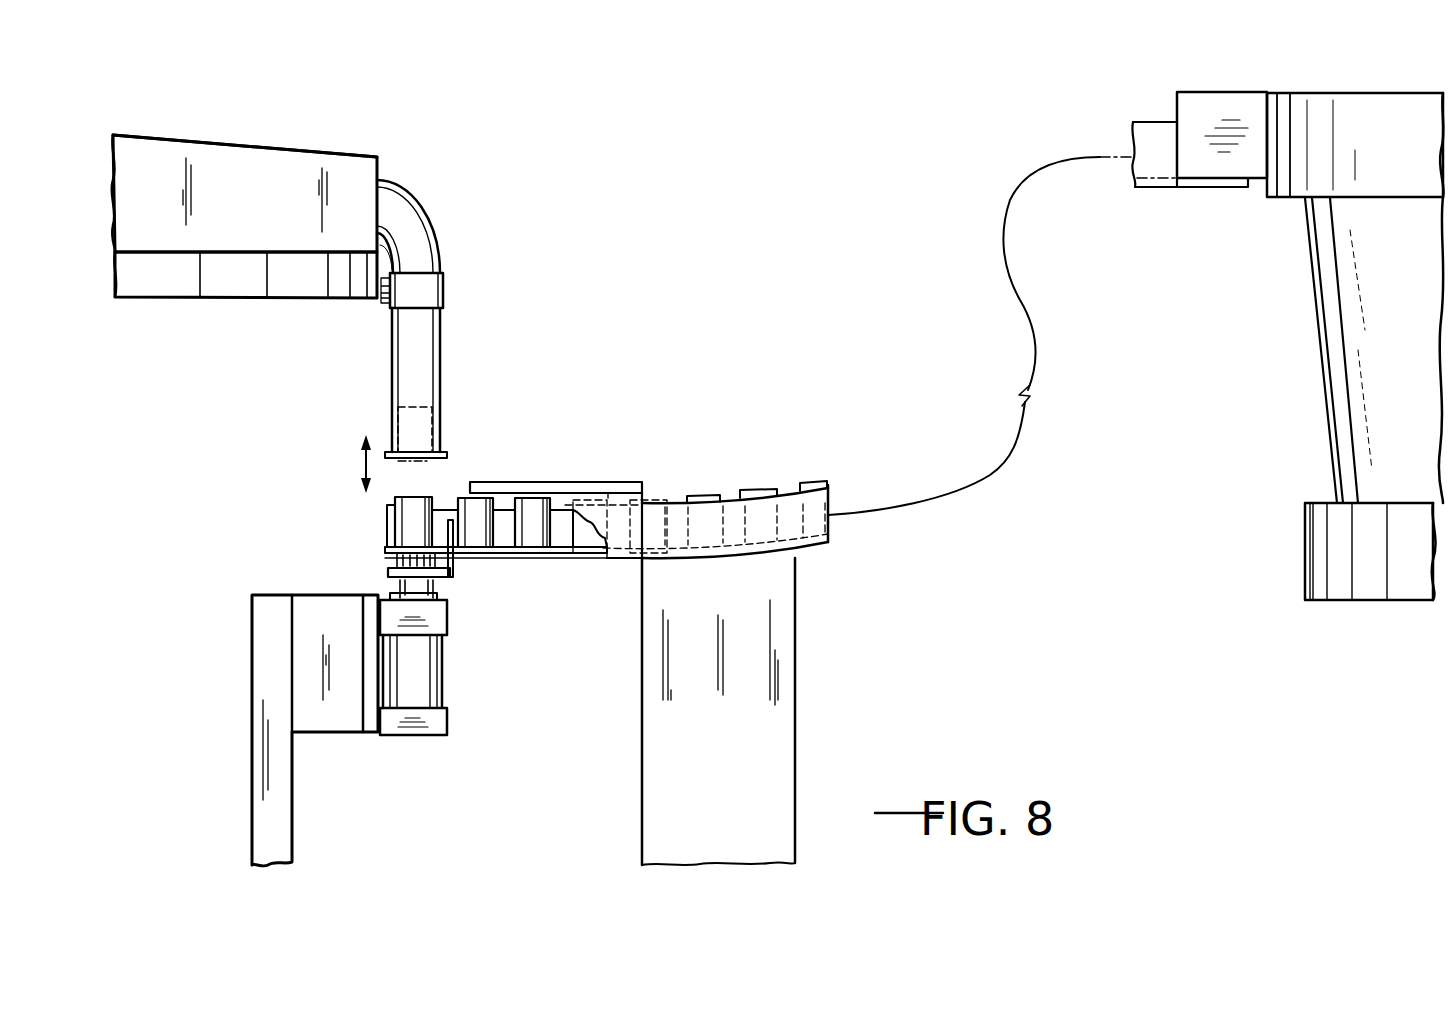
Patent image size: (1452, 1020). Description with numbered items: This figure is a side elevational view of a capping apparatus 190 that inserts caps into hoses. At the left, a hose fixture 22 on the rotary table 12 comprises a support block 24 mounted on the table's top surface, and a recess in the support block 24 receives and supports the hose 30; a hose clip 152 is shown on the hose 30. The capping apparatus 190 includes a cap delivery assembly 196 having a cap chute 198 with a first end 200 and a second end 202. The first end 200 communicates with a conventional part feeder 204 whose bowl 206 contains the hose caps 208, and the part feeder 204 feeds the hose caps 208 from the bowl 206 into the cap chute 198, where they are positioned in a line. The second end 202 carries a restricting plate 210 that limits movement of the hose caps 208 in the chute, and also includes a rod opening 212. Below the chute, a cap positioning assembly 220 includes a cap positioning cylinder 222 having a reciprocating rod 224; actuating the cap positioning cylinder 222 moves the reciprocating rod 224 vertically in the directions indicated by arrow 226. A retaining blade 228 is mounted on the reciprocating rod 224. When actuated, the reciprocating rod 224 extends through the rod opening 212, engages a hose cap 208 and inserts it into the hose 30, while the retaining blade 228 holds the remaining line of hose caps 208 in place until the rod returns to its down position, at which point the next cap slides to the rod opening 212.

The rotary table 12 is at (183, 298).
The hose fixture 22 is at (180, 135).
The support block 24 is at (335, 150).
The hose 30 is at (428, 222).
The hose clip 152 is at (443, 290).
The capping apparatus 190 is at (556, 298).
The cap delivery assembly 196 is at (845, 605).
The cap chute 198 is at (613, 560).
The first end of cap chute 200 is at (1153, 123).
The second end of cap chute 202 is at (443, 500).
The part feeder 204 is at (1365, 92).
The bowl 206 is at (1320, 363).
The hose cap 208 is at (442, 423).
The restricting plate 210 is at (563, 483).
The rod opening 212 is at (393, 565).
The cap positioning assembly 220 is at (230, 672).
The cap positioning cylinder 222 is at (447, 688).
The reciprocating rod 224 is at (397, 583).
The arrow 226 is at (362, 458).
The retaining blade 228 is at (450, 563).